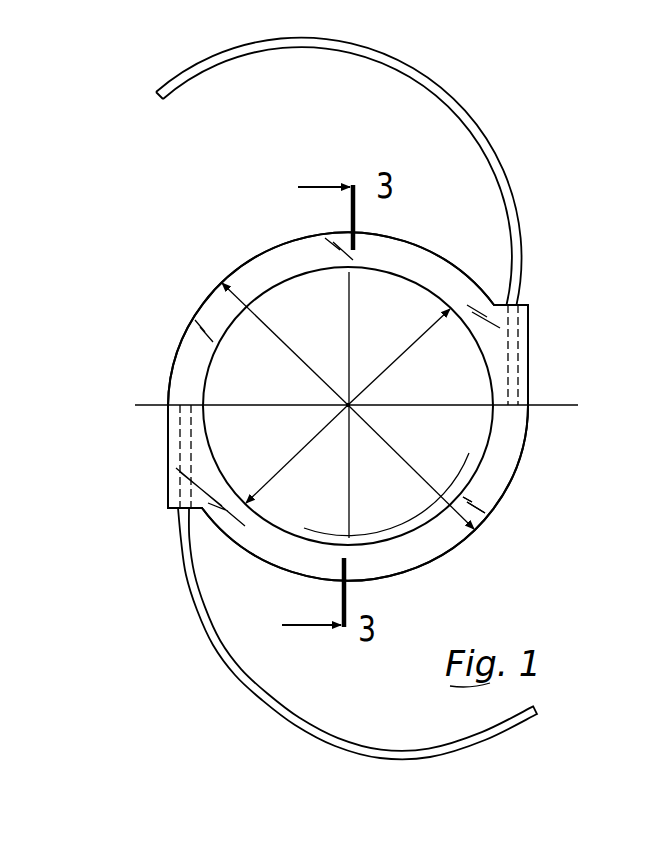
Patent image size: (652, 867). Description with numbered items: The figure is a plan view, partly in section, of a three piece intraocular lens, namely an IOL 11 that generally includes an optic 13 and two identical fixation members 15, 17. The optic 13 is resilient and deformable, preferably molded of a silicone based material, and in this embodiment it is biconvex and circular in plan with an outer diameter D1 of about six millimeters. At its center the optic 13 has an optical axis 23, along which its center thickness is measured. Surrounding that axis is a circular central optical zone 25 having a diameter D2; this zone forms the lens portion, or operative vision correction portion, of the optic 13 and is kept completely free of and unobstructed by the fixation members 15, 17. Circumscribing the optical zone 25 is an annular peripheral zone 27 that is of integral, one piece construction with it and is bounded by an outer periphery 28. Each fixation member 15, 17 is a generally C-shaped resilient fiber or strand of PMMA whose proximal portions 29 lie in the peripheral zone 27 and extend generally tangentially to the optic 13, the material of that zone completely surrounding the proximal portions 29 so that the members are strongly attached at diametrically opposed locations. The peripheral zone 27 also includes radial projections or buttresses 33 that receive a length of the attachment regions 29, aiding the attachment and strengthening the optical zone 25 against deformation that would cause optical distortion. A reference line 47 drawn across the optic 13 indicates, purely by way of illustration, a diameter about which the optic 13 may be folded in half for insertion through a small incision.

The IOL 11 is at (470, 105).
The optic 13 is at (200, 292).
The fixation member 15 is at (388, 64).
The fixation member 17 is at (413, 748).
The optical axis 23 is at (355, 402).
The central optical zone 25 is at (285, 290).
The annular peripheral zone 27 is at (190, 350).
The periphery 28 is at (493, 507).
The proximal portions 29 is at (520, 367).
The buttresses 33 is at (528, 305).
The reference line 47 is at (348, 522).
The outer diameter D1 is at (373, 518).
The diameter of central optical zone D2 is at (435, 342).